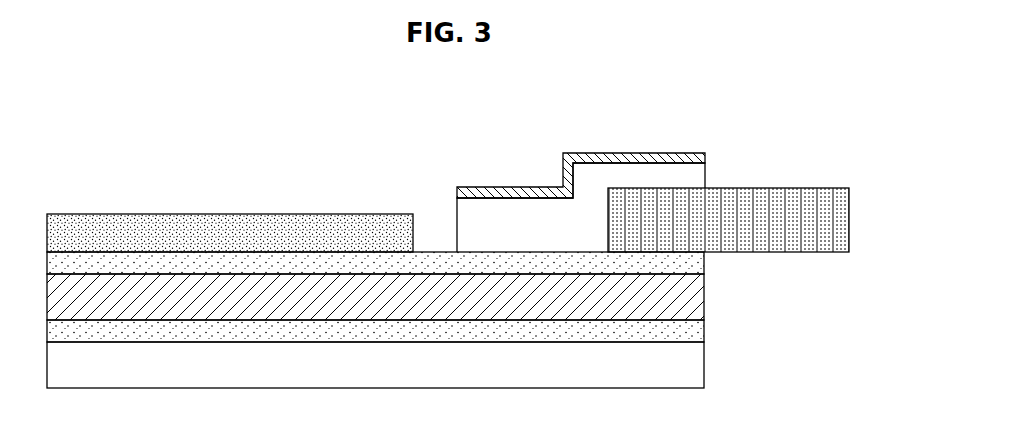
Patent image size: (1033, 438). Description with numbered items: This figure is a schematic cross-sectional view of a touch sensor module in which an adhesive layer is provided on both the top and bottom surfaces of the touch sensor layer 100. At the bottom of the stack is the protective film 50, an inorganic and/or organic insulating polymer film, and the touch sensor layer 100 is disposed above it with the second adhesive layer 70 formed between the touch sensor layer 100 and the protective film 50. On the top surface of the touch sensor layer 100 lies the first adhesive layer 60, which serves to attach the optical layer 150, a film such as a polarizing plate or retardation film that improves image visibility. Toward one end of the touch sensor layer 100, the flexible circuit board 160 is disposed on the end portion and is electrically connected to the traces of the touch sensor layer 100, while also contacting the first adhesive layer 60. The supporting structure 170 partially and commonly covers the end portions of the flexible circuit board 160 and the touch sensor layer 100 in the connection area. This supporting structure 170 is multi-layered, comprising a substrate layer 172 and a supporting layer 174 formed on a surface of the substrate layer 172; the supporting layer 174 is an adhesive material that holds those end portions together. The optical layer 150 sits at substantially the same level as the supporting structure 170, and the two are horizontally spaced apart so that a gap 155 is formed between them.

The protective film 50 is at (702, 363).
The first adhesive layer 60 is at (702, 262).
The second adhesive layer 70 is at (702, 328).
The touch sensor layer 100 is at (702, 293).
The optical layer 150 is at (241, 216).
The gap 155 is at (436, 226).
The flexible circuit board 160 is at (776, 196).
The supporting structure 170 is at (577, 166).
The substrate layer 172 is at (560, 118).
The supporting layer 174 is at (542, 215).